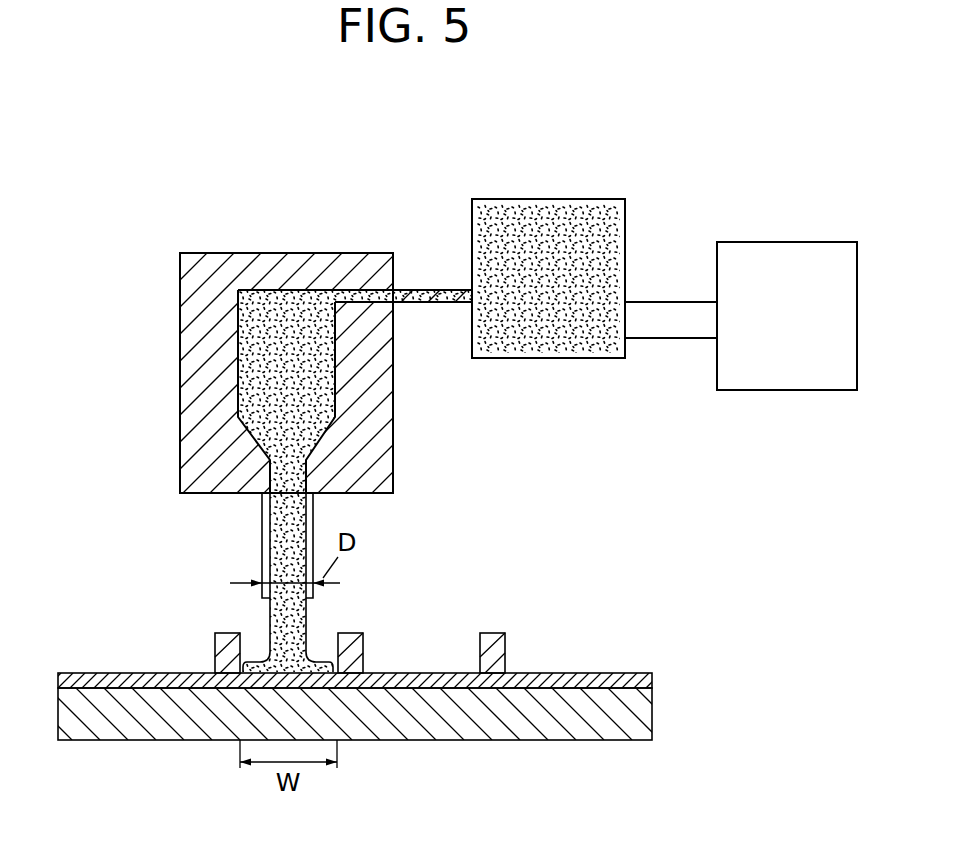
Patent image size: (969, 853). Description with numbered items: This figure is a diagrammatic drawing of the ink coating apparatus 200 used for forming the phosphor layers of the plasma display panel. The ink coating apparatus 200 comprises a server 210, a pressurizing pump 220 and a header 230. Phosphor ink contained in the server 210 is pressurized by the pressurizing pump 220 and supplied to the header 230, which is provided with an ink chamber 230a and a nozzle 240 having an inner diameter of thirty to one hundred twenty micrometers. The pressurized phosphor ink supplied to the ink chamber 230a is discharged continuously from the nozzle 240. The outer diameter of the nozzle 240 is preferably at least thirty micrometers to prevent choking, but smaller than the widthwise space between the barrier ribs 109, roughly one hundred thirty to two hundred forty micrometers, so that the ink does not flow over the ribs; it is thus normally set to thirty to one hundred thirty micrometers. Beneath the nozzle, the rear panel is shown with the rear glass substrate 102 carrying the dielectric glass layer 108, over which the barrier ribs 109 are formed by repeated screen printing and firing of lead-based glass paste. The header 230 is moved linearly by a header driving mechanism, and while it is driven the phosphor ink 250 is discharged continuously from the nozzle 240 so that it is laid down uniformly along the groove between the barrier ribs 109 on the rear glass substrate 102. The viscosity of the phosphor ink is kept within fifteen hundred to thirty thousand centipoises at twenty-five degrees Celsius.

The ink coating apparatus 200 is at (393, 230).
The server 210 is at (788, 390).
The pressurizing pump 220 is at (560, 358).
The header 230 is at (393, 470).
The ink chamber 230a is at (252, 362).
The nozzle 240 is at (260, 555).
The phosphor ink 250 is at (303, 637).
The barrier ribs 109 is at (215, 643).
The dielectric glass layer 108 is at (652, 680).
The rear glass substrate 102 is at (652, 707).